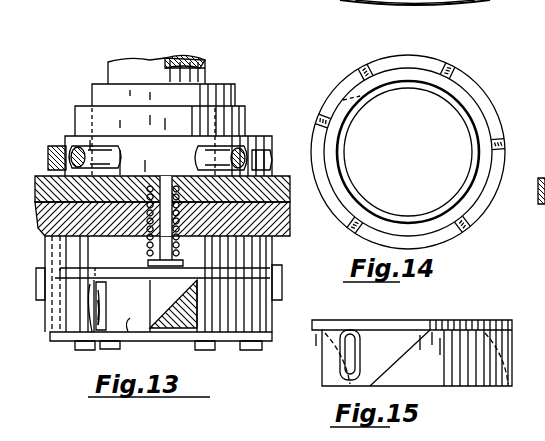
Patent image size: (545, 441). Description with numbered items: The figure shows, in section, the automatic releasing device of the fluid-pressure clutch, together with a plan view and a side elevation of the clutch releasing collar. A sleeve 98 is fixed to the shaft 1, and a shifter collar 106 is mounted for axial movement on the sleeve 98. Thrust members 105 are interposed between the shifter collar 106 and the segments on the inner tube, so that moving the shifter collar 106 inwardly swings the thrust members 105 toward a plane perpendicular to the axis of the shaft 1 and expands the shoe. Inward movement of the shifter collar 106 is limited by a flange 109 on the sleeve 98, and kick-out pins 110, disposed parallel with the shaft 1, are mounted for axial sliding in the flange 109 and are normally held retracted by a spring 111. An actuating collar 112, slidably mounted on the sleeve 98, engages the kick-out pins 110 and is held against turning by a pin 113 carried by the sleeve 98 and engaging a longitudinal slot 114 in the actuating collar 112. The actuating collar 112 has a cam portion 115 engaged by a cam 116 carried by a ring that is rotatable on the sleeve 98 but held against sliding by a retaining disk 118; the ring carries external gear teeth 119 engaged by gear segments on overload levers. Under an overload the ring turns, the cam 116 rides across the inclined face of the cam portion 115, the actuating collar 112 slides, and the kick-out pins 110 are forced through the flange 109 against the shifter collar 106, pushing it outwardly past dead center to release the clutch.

In FIG. 13, the shaft 1 is at (142, 64).
In FIG. 13, the sleeve 98 is at (92, 92).
In FIG. 13, the thrust members 105 is at (58, 148).
In FIG. 13, the shifter collar 106 is at (246, 122).
In FIG. 13, the flange 109 is at (272, 172).
In FIG. 13, the kick-out pins 110 is at (170, 244).
In FIG. 13, the spring 111 is at (152, 244).
In FIG. 13, the actuating collar 112 is at (205, 270).
In FIG. 14, the actuating collar 112 is at (496, 110).
In FIG. 15, the actuating collar 112 is at (456, 328).
In FIG. 13, the pin 113 is at (104, 289).
In FIG. 13, the longitudinal slot 114 is at (100, 330).
In FIG. 14, the longitudinal slot 114 is at (350, 96).
In FIG. 15, the longitudinal slot 114 is at (346, 330).
In FIG. 13, the cam portion 115 is at (124, 341).
In FIG. 14, the cam portion 115 is at (392, 64).
In FIG. 15, the cam portion 115 is at (404, 360).
In FIG. 13, the cam 116 is at (186, 341).
In FIG. 13, the retaining disk 118 is at (250, 341).
In FIG. 14, the external gear teeth 119 is at (534, 196).